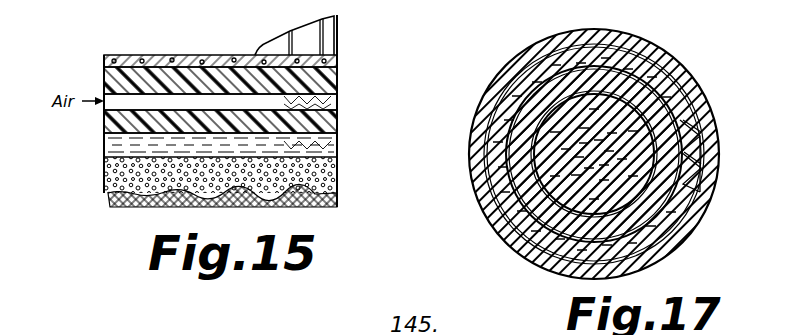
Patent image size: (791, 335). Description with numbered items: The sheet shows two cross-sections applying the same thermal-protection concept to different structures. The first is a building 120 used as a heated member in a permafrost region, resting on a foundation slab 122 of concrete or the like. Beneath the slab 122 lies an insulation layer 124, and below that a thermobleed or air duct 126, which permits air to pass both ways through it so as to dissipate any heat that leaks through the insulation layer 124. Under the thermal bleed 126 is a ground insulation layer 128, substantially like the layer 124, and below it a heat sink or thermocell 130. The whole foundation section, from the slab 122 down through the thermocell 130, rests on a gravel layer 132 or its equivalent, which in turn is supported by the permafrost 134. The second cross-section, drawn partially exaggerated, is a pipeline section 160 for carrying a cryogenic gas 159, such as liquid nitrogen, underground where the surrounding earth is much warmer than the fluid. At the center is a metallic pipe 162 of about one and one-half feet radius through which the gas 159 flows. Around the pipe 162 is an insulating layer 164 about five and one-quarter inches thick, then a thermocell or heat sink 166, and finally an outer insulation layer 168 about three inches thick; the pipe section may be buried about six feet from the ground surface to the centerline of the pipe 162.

In FIG. 15, the building 120 is at (321, 42).
In FIG. 15, the foundation slab 122 is at (338, 60).
In FIG. 15, the insulation layer 124 is at (325, 80).
In FIG. 15, the thermobleed or air duct 126 is at (338, 97).
In FIG. 15, the ground insulation layer 128 is at (327, 122).
In FIG. 15, the heat sink or thermocell 130 is at (337, 150).
In FIG. 15, the gravel layer 132 is at (330, 176).
In FIG. 15, the permafrost 134 is at (333, 201).
In FIG. 17, the gas 159 is at (617, 172).
In FIG. 17, the pipeline section 160 is at (471, 212).
In FIG. 17, the metallic pipe 162 is at (566, 106).
In FIG. 17, the insulating layer 164 is at (650, 132).
In FIG. 17, the thermocell or heat sink 166 is at (680, 160).
In FIG. 17, the insulation layer 168 is at (527, 248).